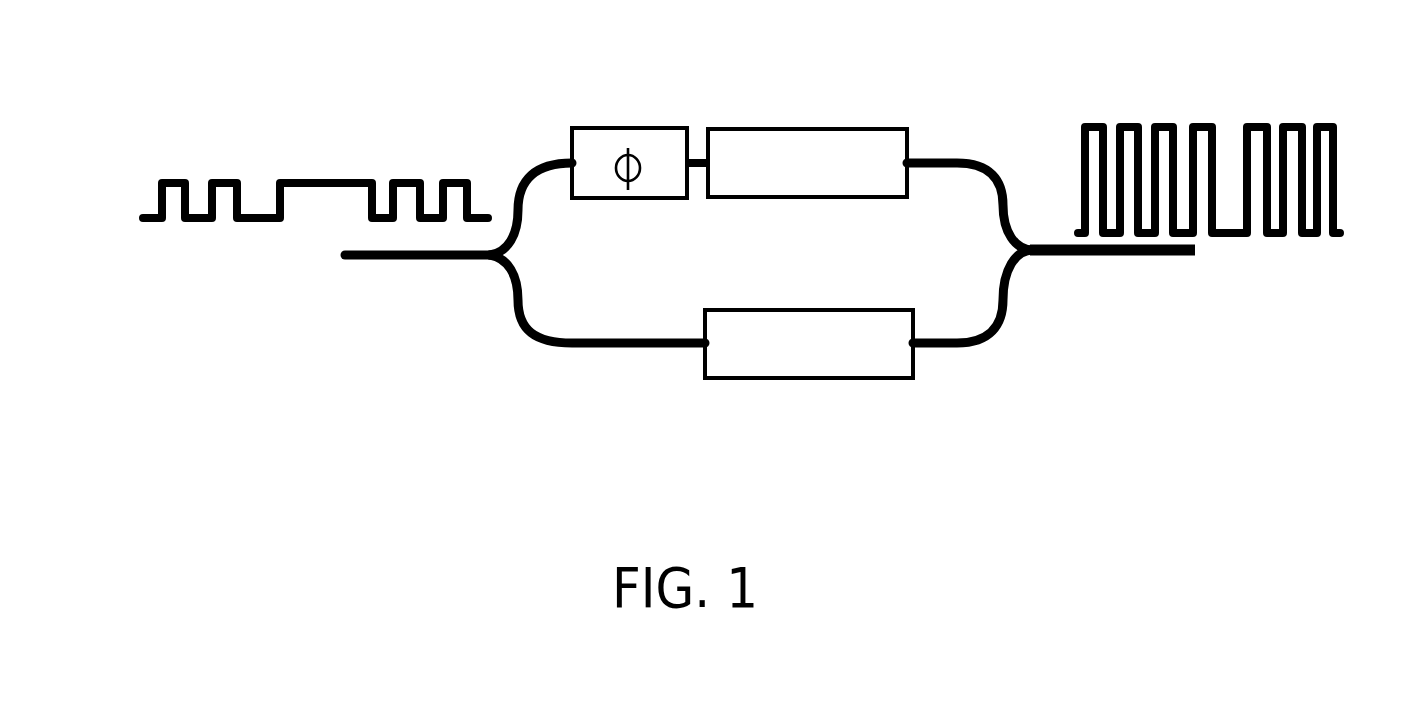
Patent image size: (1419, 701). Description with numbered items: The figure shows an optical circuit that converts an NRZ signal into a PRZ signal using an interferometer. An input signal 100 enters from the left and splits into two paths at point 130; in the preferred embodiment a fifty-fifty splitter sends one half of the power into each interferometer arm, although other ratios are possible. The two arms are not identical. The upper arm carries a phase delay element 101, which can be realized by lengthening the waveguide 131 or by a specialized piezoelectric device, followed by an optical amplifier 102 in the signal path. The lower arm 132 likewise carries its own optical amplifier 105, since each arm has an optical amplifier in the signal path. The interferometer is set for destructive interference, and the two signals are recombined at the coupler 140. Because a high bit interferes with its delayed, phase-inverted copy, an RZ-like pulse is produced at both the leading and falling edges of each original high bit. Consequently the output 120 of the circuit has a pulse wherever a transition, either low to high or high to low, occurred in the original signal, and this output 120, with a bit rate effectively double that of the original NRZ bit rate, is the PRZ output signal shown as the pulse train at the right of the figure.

The input signal 100 is at (277, 183).
The phase delay element 101 is at (628, 128).
The first semiconductor optical amplifier (SOA) 102 is at (800, 128).
The second semiconductor optical amplifier (SOA) 105 is at (808, 378).
The output 120 is at (1305, 238).
The splitting point 130 is at (490, 258).
The waveguide 131 is at (953, 160).
The lower interferometer arm waveguide 132 is at (948, 347).
The coupler 140 is at (1043, 257).